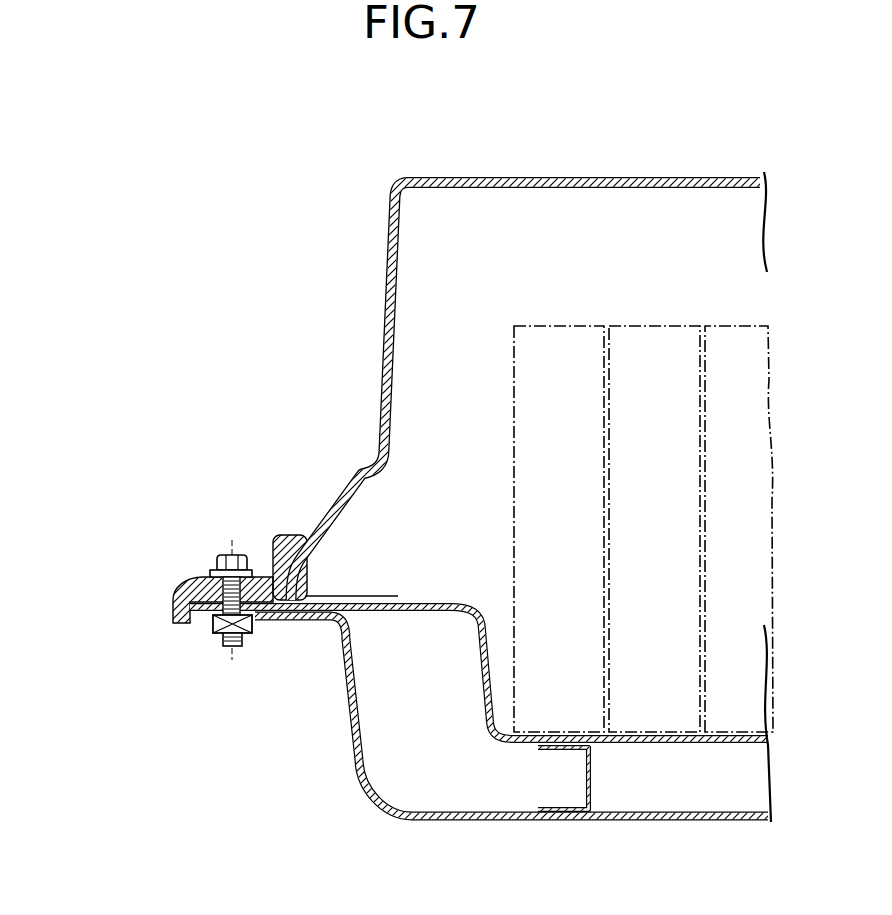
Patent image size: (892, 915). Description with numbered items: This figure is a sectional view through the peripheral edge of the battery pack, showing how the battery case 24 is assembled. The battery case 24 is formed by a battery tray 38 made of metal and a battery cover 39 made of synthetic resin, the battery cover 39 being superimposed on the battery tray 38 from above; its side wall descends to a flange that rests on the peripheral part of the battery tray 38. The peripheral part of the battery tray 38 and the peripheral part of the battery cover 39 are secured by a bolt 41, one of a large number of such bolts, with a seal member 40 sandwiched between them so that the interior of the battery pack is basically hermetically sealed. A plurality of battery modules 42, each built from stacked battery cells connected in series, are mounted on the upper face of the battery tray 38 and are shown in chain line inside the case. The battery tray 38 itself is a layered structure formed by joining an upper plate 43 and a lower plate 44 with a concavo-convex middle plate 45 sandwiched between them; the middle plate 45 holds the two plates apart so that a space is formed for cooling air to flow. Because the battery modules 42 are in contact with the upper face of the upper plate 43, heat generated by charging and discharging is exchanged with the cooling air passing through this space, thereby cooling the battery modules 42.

The battery case 24 is at (106, 488).
The battery tray 38 is at (439, 754).
The battery cover 39 is at (437, 397).
The seal member 40 is at (292, 538).
The bolt 41 is at (229, 552).
The battery module 42 is at (626, 315).
The upper plate 43 is at (482, 688).
The lower plate 44 is at (467, 822).
The middle plate 45 is at (592, 788).